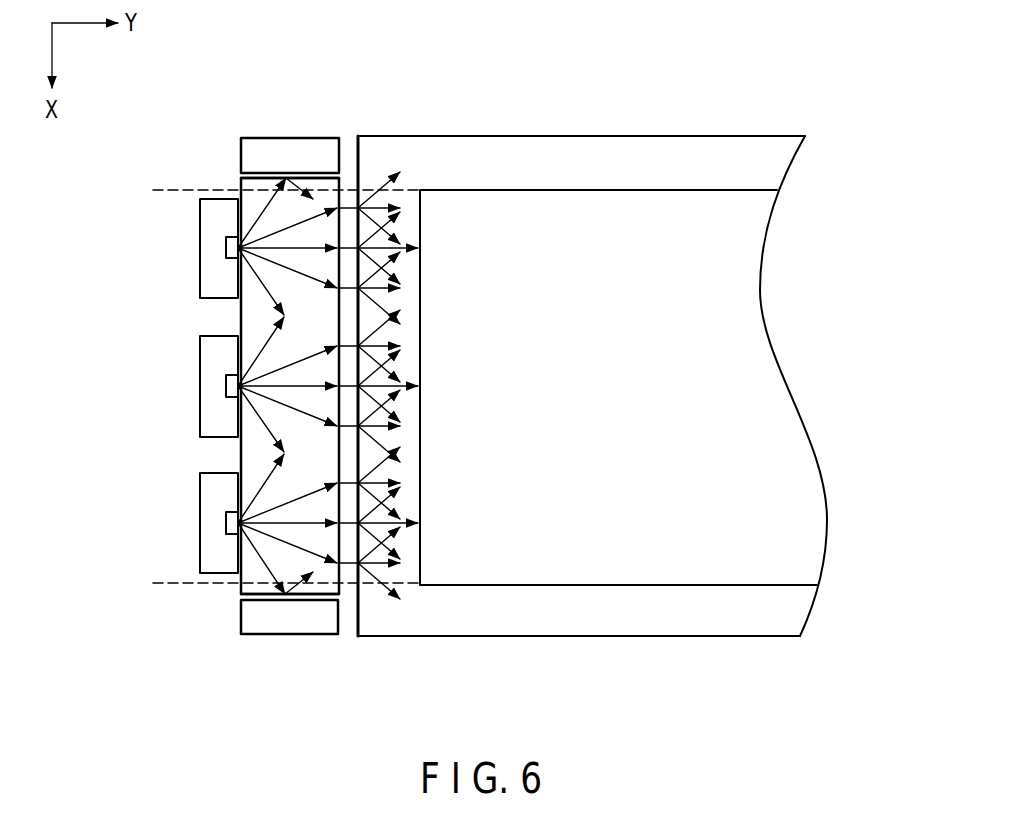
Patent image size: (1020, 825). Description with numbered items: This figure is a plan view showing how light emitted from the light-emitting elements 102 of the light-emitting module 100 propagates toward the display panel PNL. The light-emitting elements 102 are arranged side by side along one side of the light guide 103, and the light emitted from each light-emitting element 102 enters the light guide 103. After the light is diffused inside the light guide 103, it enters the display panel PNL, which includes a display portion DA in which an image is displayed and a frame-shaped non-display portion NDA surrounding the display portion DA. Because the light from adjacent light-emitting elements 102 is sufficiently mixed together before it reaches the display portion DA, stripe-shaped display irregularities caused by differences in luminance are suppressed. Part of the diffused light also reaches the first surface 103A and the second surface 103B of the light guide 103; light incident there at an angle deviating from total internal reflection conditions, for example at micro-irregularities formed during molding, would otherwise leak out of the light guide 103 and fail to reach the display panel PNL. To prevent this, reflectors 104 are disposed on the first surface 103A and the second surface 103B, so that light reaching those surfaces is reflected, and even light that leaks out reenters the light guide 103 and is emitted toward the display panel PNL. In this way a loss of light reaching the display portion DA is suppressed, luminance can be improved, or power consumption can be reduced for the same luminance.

The light-emitting module 100 is at (123, 133).
The light-emitting elements 102 is at (208, 275).
The light guide 103 is at (248, 457).
The first surface 103A is at (303, 170).
The second surface 103B is at (306, 600).
The reflector 104 is at (247, 155).
The non-display portion NDA is at (489, 613).
The display portion DA is at (585, 562).
The display panel PNL is at (678, 637).